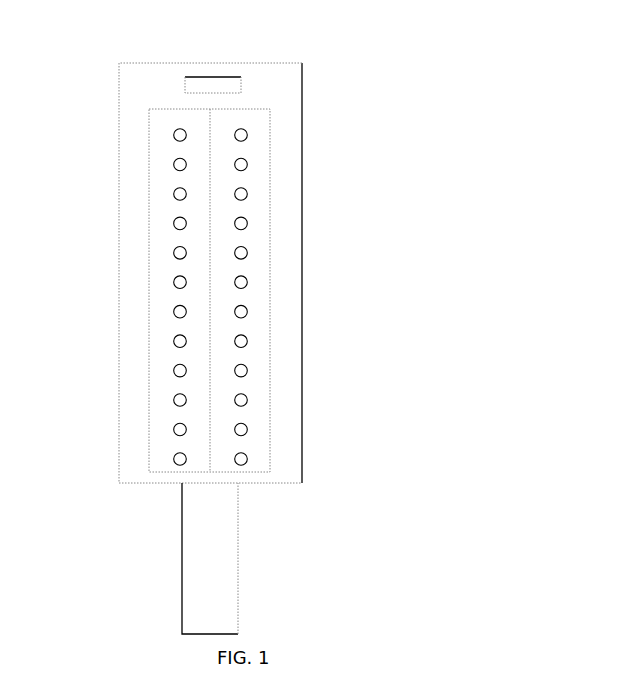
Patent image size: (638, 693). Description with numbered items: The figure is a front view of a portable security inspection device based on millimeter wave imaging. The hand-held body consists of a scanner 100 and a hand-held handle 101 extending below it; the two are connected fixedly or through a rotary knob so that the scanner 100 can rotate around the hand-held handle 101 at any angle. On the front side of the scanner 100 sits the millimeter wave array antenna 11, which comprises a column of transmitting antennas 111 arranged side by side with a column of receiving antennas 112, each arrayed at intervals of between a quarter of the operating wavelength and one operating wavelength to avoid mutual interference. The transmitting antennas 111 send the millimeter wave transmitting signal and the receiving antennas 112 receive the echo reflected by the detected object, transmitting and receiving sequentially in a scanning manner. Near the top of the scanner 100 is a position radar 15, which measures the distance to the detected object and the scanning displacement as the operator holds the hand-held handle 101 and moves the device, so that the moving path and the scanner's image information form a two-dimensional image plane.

The scanner 100 is at (302, 273).
The hand-held handle 101 is at (238, 596).
The millimeter wave array antenna 11 is at (270, 191).
The transmitting antennas 111 is at (173, 135).
The receiving antennas 112 is at (247, 132).
The position radar 15 is at (212, 84).